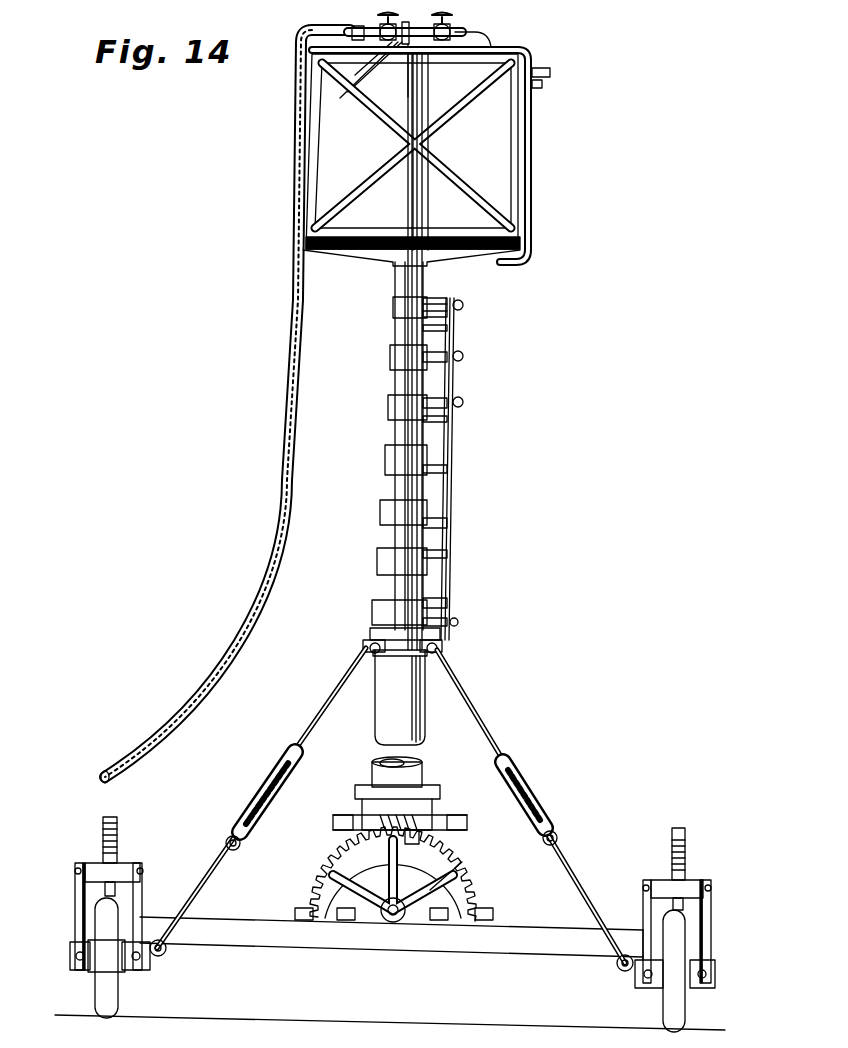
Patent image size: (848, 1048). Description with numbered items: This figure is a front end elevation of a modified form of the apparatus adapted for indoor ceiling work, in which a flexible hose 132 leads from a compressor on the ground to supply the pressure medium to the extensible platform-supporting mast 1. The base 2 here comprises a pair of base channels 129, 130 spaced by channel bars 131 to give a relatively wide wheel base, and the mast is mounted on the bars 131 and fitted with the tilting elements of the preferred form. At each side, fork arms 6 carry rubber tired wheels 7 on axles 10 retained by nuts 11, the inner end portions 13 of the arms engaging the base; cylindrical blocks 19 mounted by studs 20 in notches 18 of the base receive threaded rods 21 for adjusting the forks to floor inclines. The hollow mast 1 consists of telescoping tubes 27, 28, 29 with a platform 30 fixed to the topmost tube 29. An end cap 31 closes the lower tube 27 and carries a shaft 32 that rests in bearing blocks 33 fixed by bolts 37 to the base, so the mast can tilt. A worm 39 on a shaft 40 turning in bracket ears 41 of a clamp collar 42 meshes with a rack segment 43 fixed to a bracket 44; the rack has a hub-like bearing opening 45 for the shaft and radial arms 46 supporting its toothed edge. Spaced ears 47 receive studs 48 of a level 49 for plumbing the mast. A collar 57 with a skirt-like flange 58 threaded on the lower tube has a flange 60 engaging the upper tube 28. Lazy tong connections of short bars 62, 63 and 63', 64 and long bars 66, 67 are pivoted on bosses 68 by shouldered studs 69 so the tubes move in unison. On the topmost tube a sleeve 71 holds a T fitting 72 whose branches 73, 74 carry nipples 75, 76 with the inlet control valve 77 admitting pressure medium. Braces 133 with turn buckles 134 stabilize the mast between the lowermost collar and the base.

The extensible platform-supporting mast 1 is at (398, 283).
The base 2 is at (645, 922).
The arms 6 is at (92, 970).
The rubber tired wheels 7 is at (110, 1000).
The axles 10 is at (72, 960).
The nuts 11 is at (148, 962).
The inner end portions 13 is at (70, 950).
The notches 18 is at (78, 880).
The cylindrical blocks 19 is at (130, 870).
The studs 20 is at (88, 862).
The threaded rods 21 is at (117, 850).
The lower tube 27 is at (385, 708).
The upper tube 28 is at (398, 322).
The topmost tube 29 is at (424, 285).
The platform 30 is at (482, 252).
The end cap 31 is at (432, 852).
The shaft 32 is at (392, 925).
The bearing blocks 33 is at (466, 905).
The bolts 37 is at (348, 925).
The worm 39 is at (432, 820).
The shaft 40 is at (362, 818).
The bracket ears 41 is at (378, 826).
The clamp collar 42 is at (438, 796).
The rack segment 43 is at (325, 872).
The bracket 44 is at (294, 912).
The hub-like bearing opening 45 is at (400, 920).
The radial arms 46 is at (462, 870).
The spaced ears 47 is at (372, 775).
The studs 48 is at (440, 788).
The level 49 is at (410, 770).
The collar 57 is at (392, 305).
The skirt-like flange 58 is at (384, 512).
The flange 60 is at (386, 448).
The short bar 62 is at (455, 320).
The short bar 63 is at (457, 311).
The short bar 63' is at (455, 615).
The short bar 64 is at (448, 603).
The long bar 66 is at (463, 366).
The long bar 67 is at (448, 438).
The bosses 68 is at (440, 402).
The shouldered studs 69 is at (462, 408).
The sleeve 71 is at (434, 24).
The T fitting 72 is at (487, 17).
The branch 73 is at (402, 44).
The branch 74 is at (412, 46).
The nipple 75 is at (380, 42).
The nipple 76 is at (424, 58).
The inlet control valve 77 is at (372, 50).
The base channel 129 is at (76, 910).
The base channel 130 is at (711, 932).
The channel bars 131 is at (238, 938).
The flexible hose 132 is at (300, 64).
The braces 133 is at (476, 700).
The turn buckles 134 is at (532, 784).